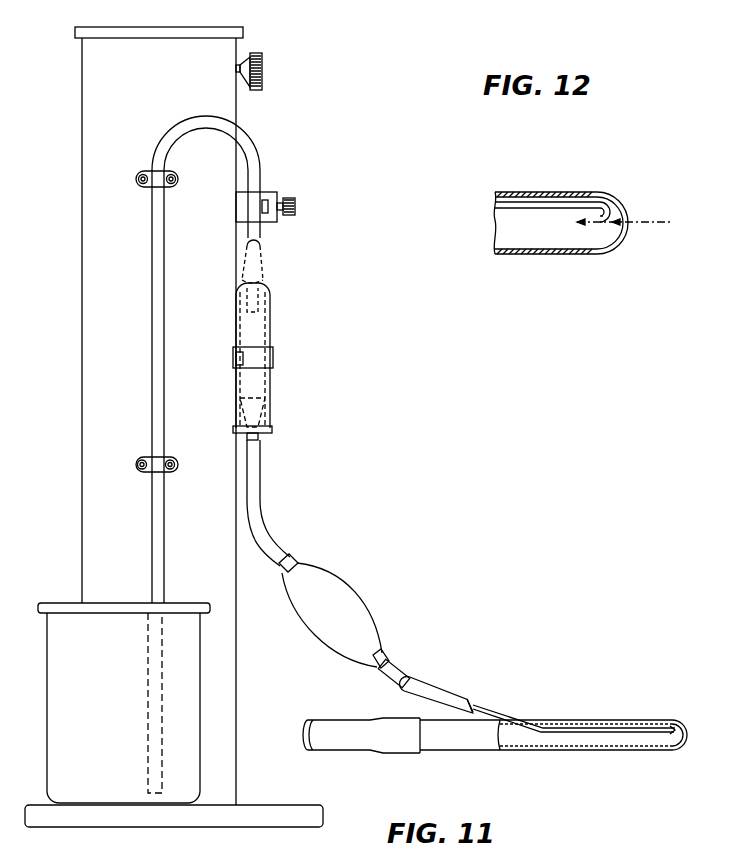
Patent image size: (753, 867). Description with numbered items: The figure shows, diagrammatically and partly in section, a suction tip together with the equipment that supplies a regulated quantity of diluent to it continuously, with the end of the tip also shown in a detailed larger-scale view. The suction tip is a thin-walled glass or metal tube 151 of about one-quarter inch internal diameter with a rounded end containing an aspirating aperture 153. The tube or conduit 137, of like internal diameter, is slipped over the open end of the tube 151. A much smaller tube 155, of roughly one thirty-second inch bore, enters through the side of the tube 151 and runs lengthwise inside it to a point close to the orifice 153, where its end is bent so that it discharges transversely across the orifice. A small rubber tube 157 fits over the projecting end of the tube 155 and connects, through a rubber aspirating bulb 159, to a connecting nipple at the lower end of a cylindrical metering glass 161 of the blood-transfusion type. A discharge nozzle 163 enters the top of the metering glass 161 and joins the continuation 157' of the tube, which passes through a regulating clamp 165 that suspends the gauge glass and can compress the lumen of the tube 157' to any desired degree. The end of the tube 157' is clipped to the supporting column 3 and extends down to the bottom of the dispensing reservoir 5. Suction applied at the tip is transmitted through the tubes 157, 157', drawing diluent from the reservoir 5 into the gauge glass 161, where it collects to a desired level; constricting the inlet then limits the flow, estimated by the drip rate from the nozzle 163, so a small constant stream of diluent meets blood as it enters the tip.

In FIG. 11, the supporting column 3 is at (85, 81).
In FIG. 11, the dispensing reservoir 5 is at (49, 725).
In FIG. 11, the tube or conduit 137 is at (350, 737).
In FIG. 11, the tube 151 is at (448, 742).
In FIG. 12, the tube 151 is at (542, 255).
In FIG. 11, the aspirating aperture 153 is at (688, 735).
In FIG. 12, the aspirating aperture 153 is at (628, 222).
In FIG. 11, the small tube 155 is at (497, 720).
In FIG. 12, the small tube 155 is at (550, 192).
In FIG. 11, the rubber tube 157 is at (371, 576).
In FIG. 11, the continuation of the tube 157' is at (221, 454).
In FIG. 11, the rubber aspirating bulb 159 is at (335, 585).
In FIG. 11, the metering glass 161 is at (265, 338).
In FIG. 11, the discharge nozzle 163 is at (262, 303).
In FIG. 11, the regulating clamp 165 is at (297, 205).